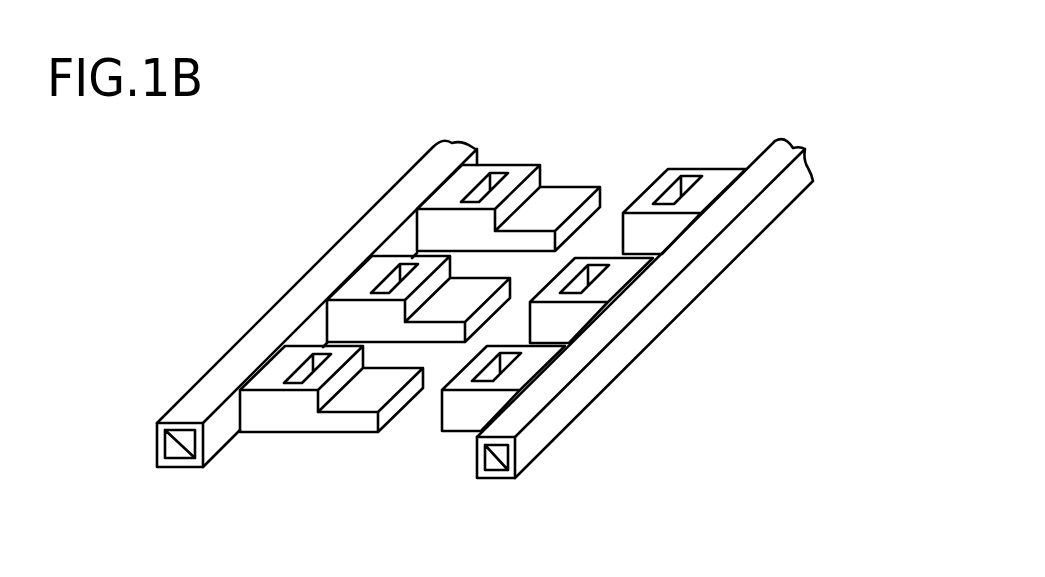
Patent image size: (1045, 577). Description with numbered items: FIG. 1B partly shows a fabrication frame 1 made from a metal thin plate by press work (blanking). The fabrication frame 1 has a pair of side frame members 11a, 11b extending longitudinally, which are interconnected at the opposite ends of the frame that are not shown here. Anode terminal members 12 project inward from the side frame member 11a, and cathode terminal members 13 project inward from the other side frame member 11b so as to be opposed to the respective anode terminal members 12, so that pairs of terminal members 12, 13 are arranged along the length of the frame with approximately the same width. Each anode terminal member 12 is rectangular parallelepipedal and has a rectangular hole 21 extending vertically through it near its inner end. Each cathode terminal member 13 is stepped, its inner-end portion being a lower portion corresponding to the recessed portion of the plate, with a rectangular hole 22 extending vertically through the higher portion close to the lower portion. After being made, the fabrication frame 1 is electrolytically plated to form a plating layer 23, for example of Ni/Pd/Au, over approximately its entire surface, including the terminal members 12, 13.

The fabrication frame 1 is at (833, 155).
The side frame member 11a is at (652, 282).
The side frame member 11b is at (328, 268).
The anode terminal member 12 is at (662, 180).
The cathode terminal member 13 is at (528, 168).
The hole 21 is at (686, 180).
The hole 22 is at (497, 176).
The plating layer 23 is at (158, 455).